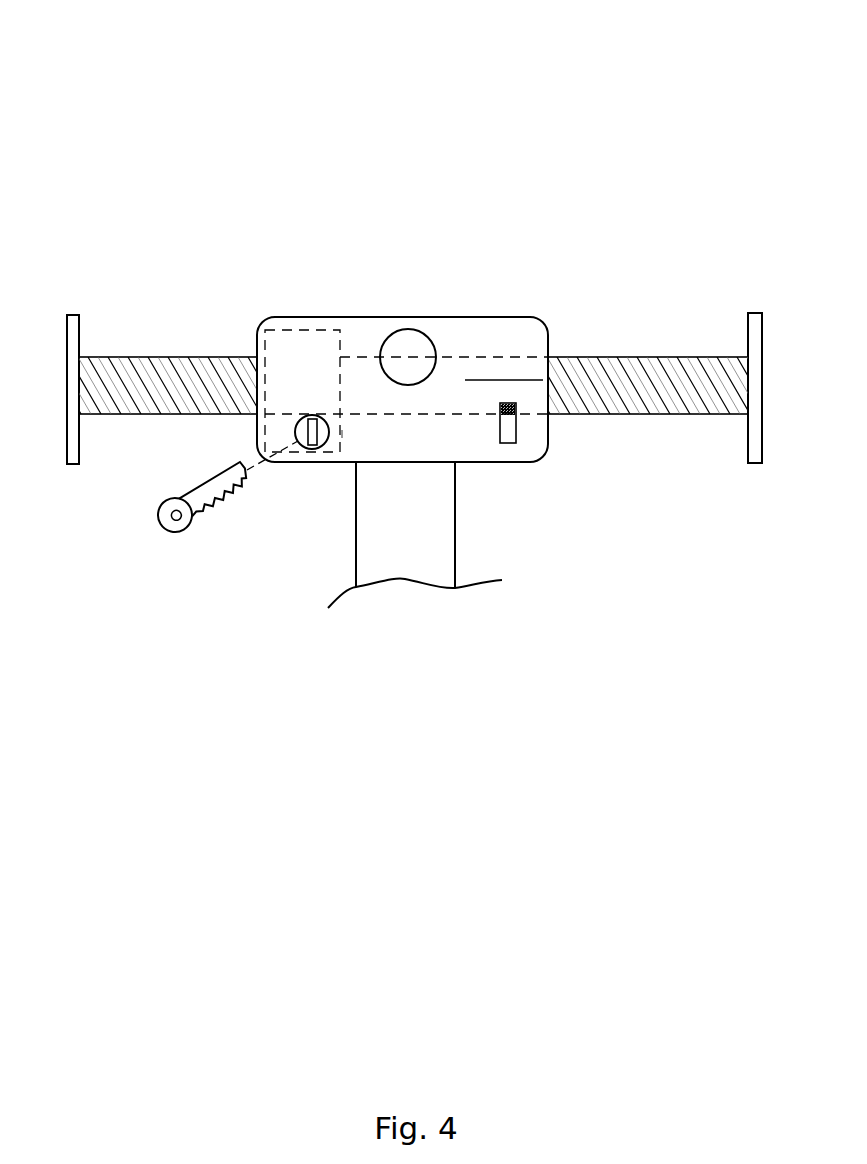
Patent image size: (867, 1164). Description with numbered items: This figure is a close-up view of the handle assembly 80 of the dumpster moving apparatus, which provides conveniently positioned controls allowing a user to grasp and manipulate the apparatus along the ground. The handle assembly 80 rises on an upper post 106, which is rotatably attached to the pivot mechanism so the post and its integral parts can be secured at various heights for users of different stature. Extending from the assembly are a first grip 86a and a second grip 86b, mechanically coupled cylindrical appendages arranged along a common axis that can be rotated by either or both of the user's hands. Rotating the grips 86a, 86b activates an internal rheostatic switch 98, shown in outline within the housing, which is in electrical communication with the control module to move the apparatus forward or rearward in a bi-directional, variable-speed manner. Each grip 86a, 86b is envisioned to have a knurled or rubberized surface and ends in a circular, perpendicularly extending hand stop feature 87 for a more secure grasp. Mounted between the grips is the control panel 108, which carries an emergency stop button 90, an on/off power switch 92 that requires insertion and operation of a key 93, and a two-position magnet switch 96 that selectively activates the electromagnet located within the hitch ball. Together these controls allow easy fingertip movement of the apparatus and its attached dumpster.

The handle assembly 80 is at (640, 155).
The first grip 86a is at (181, 357).
The second grip 86b is at (677, 415).
The hand stop feature 87 is at (73, 315).
The emergency stop button 90 is at (407, 329).
The on/off power switch 92 is at (304, 448).
The key 93 is at (157, 516).
The magnet switch 96 is at (528, 431).
The rheostatic switch 98 is at (280, 327).
The upper post 106 is at (385, 522).
The control panel 108 is at (340, 318).